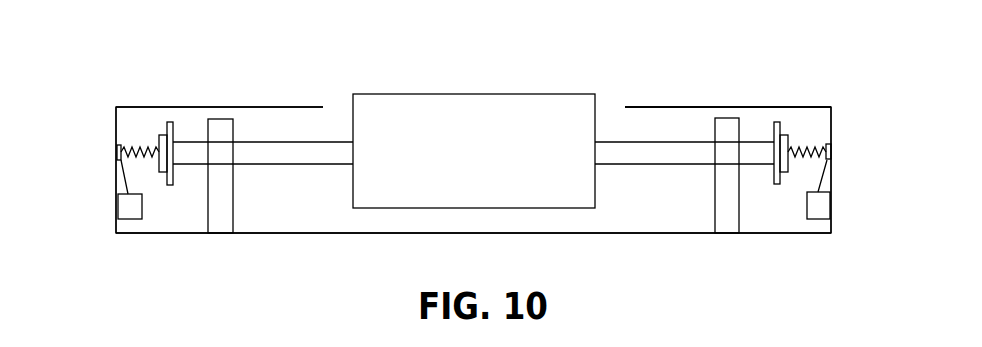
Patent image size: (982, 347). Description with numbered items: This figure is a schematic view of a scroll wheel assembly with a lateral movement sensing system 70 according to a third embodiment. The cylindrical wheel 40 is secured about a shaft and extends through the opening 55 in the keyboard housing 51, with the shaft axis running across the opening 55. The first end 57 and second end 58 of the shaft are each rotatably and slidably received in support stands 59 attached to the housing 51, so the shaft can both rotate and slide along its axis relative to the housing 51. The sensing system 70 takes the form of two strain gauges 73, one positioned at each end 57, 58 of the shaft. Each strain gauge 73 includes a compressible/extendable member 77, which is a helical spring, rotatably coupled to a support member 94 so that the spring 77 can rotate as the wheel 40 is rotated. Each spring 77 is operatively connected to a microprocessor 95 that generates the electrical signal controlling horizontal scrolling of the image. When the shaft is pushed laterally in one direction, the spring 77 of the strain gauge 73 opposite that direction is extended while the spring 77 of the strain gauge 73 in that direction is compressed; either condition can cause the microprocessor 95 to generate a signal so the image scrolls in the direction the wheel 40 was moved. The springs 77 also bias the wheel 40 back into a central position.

The wheel 40 is at (504, 97).
The keyboard housing 51 is at (710, 105).
The opening 55 is at (345, 100).
The first end 57 is at (185, 143).
The second end 58 is at (778, 136).
The support stands 59 is at (222, 118).
The lateral movement sensing system 70 is at (160, 212).
The strain gauges 73 is at (133, 128).
The compressible/extendable member 77 is at (150, 145).
The support member 94 is at (118, 148).
The microprocessor 95 is at (118, 205).